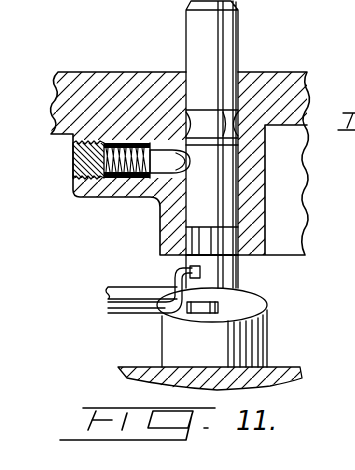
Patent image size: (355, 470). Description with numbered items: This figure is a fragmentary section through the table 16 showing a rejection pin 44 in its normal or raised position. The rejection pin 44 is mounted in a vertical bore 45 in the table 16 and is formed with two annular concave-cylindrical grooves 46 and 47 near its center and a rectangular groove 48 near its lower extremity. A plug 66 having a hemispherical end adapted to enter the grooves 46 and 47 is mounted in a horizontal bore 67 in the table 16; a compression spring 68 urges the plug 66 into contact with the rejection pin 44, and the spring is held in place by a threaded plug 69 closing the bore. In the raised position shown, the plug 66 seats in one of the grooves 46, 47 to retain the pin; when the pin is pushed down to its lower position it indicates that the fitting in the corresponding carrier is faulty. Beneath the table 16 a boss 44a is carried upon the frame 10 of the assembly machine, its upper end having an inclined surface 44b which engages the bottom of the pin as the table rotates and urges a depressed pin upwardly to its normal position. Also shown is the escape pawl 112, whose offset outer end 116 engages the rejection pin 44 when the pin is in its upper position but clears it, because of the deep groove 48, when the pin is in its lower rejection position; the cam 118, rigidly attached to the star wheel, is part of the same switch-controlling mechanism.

The frame 10 is at (276, 367).
The table 16 is at (271, 78).
The rejection pin 44 is at (192, 45).
The boss 44a is at (172, 355).
The inclined surface 44b is at (257, 305).
The vertical bore 45 is at (241, 205).
The annular concave-cylindrical groove 46 is at (222, 176).
The annular concave-cylindrical groove 47 is at (195, 122).
The rectangular groove 48 is at (227, 246).
The plug 66 is at (166, 190).
The horizontal bore 67 is at (151, 180).
The compression spring 68 is at (112, 179).
The threaded plug 69 is at (72, 190).
The escape pawl 112 is at (143, 312).
The outer end of the pawl 116 is at (178, 281).
The cam 118 is at (108, 293).